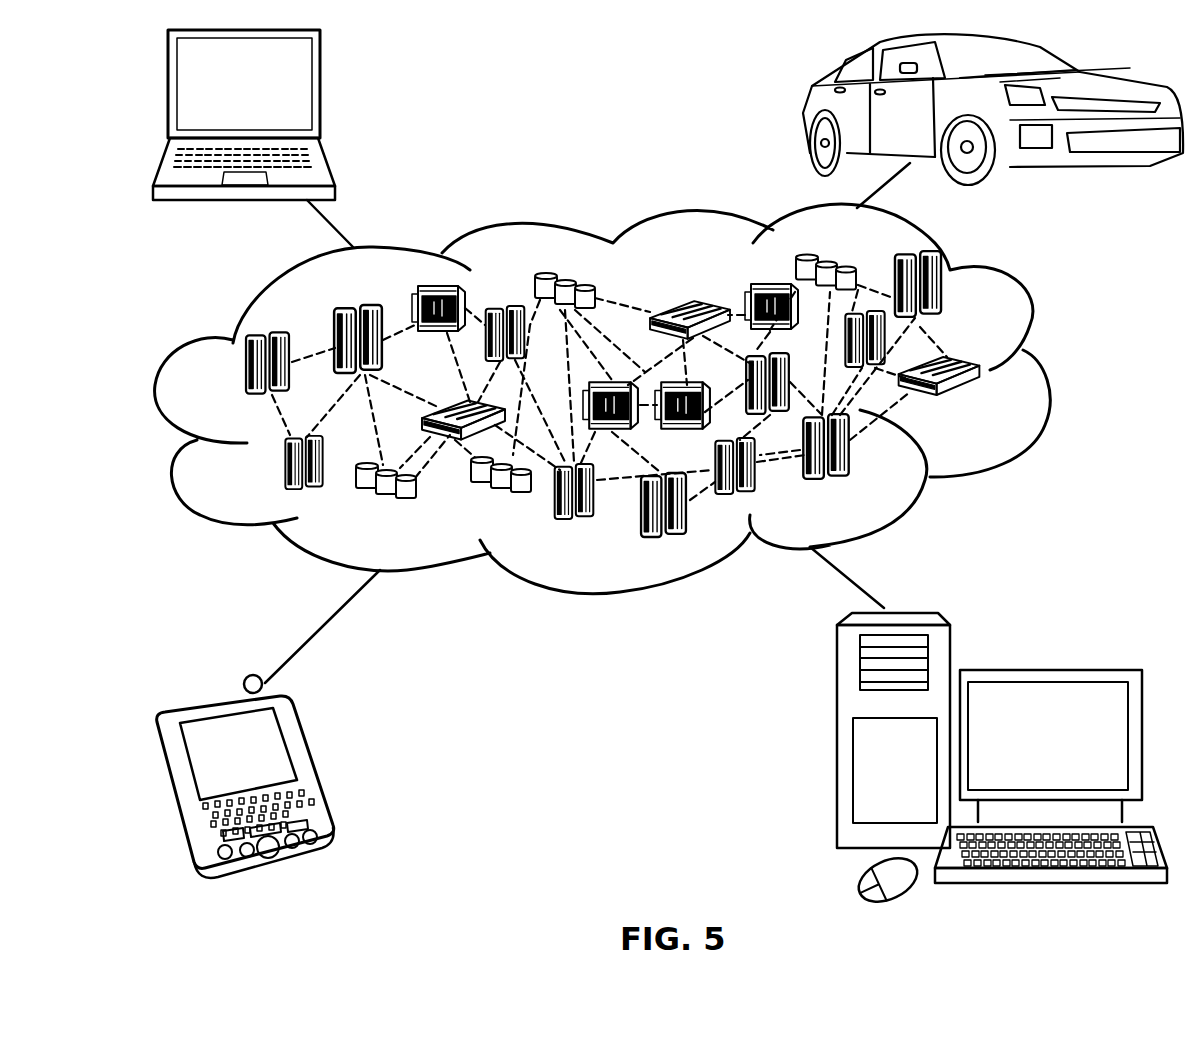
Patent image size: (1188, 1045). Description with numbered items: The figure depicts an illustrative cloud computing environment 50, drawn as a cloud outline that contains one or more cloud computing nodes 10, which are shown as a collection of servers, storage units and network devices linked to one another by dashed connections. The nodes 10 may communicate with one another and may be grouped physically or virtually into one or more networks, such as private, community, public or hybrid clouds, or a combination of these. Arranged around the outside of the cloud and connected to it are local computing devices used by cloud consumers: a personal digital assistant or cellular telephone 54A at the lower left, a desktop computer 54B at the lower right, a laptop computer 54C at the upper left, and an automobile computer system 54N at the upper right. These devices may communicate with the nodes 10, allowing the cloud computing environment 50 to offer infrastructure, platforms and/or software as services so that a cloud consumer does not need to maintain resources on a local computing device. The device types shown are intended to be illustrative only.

The cloud computing nodes 10 is at (992, 406).
The cloud computing environment 50 is at (1050, 374).
The personal digital assistant or cellular telephone 54A is at (310, 767).
The desktop computer 54B is at (1048, 670).
The laptop computer 54C is at (322, 93).
The automobile computer system 54N is at (803, 110).